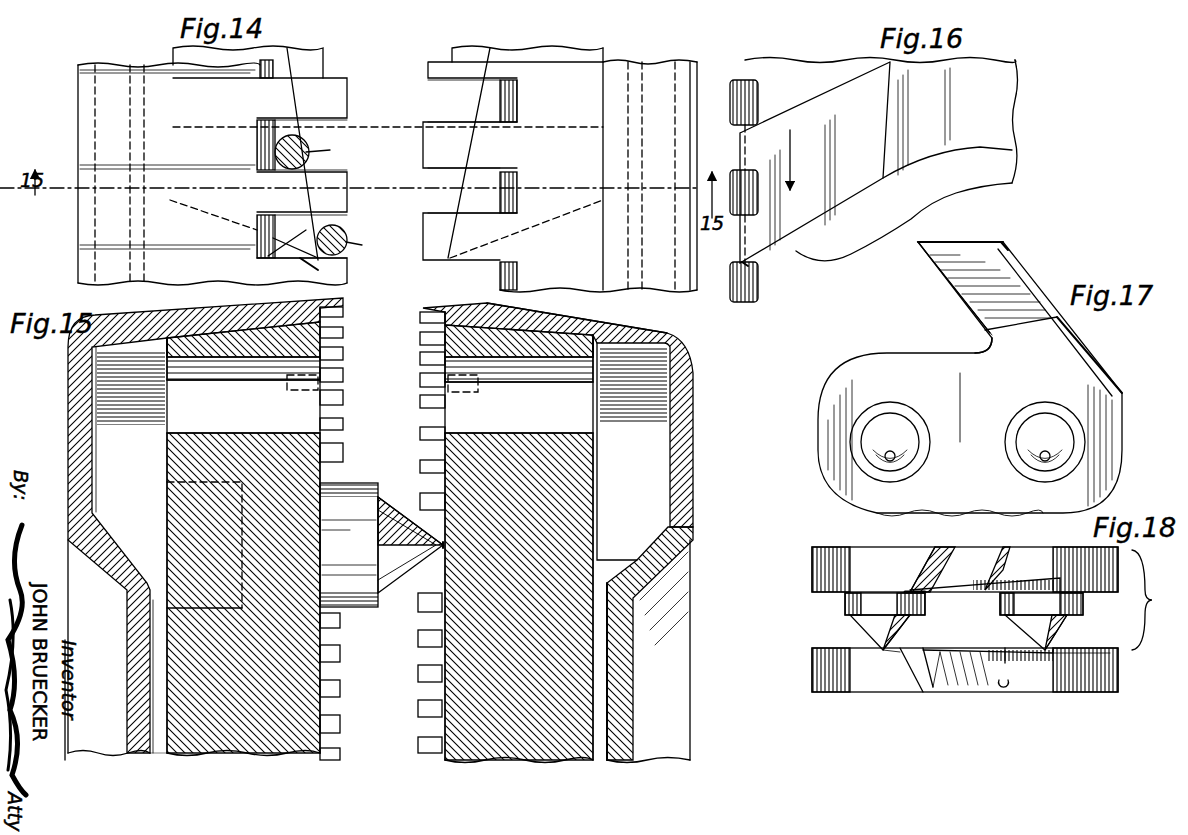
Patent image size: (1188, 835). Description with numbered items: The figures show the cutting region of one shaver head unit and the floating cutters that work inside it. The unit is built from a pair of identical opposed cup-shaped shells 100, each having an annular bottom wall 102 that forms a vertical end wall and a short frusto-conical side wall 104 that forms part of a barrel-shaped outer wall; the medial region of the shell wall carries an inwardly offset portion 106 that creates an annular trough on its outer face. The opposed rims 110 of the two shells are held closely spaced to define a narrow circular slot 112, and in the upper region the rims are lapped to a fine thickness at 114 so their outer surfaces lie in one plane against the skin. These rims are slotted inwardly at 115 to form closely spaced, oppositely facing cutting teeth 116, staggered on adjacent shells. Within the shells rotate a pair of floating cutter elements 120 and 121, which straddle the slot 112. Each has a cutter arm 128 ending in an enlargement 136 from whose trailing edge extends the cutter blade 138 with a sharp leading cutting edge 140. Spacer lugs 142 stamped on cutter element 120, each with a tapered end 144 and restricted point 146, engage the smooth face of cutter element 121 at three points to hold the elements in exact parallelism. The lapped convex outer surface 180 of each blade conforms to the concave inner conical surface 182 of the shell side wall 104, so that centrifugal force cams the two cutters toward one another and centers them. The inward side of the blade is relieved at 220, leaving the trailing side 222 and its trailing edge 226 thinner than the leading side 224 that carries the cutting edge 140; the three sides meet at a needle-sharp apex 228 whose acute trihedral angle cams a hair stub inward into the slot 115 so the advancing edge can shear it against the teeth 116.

In FIG. 15, the cup-shaped shell 100 is at (66, 412).
In FIG. 15, the annular bottom wall 102 is at (695, 432).
In FIG. 14, the frusto-conical side wall 104 is at (197, 245).
In FIG. 15, the frusto-conical side wall 104 is at (152, 318).
In FIG. 15, the inwardly offset portion 106 is at (625, 712).
In FIG. 15, the rim 110 is at (418, 608).
In FIG. 14, the circular slot 112 is at (383, 72).
In FIG. 15, the circular slot 112 is at (392, 720).
In FIG. 14, the ground rim surface 114 is at (330, 95).
In FIG. 15, the ground rim surface 114 is at (343, 303).
In FIG. 14, the slot between teeth 115 is at (518, 118).
In FIG. 14, the cutting teeth 116 is at (282, 115).
In FIG. 16, the cutting teeth 116 is at (740, 100).
In FIG. 15, the cutting teeth 116 is at (490, 303).
In FIG. 16, the cutter element 120 is at (1005, 133).
In FIG. 18, the cutter element 120 is at (842, 562).
In FIG. 15, the cutter element 120 is at (262, 755).
In FIG. 18, the cutter element 121 is at (1073, 694).
In FIG. 15, the cutter element 121 is at (513, 752).
In FIG. 17, the cutter arm 128 is at (1005, 518).
In FIG. 17, the enlargement 136 is at (986, 456).
In FIG. 18, the enlargement 136 is at (960, 696).
In FIG. 15, the enlargement 136 is at (228, 468).
In FIG. 14, the cutter blade 138 is at (321, 207).
In FIG. 16, the cutter blade 138 is at (830, 170).
In FIG. 17, the cutter blade 138 is at (1014, 313).
In FIG. 18, the cutter blade 138 is at (890, 686).
In FIG. 15, the cutter blade 138 is at (289, 413).
In FIG. 17, the leading cutting edge 140 is at (918, 246).
In FIG. 18, the leading cutting edge 140 is at (918, 568).
In FIG. 17, the spacer lug 142 is at (855, 450).
In FIG. 18, the spacer lug 142 is at (850, 600).
In FIG. 15, the spacer lug 142 is at (349, 545).
In FIG. 17, the tapered end 144 is at (876, 455).
In FIG. 18, the tapered end 144 is at (870, 622).
In FIG. 15, the tapered end 144 is at (417, 551).
In FIG. 17, the restricted point 146 is at (886, 461).
In FIG. 18, the restricted point 146 is at (900, 650).
In FIG. 15, the restricted point 146 is at (445, 548).
In FIG. 16, the outer surface 180 is at (722, 193).
In FIG. 17, the outer surface 180 is at (962, 246).
In FIG. 18, the outer surface 180 is at (925, 705).
In FIG. 15, the outer surface 180 is at (380, 386).
In FIG. 15, the inner conical surface 182 is at (232, 380).
In FIG. 17, the relieved portion 220 is at (1077, 326).
In FIG. 18, the relieved portion 220 is at (1005, 664).
In FIG. 15, the relieved portion 220 is at (343, 386).
In FIG. 17, the trailing side 222 is at (1024, 266).
In FIG. 18, the trailing side 222 is at (1000, 583).
In FIG. 17, the leading side 224 is at (955, 292).
In FIG. 17, the trailing edge 226 is at (1008, 244).
In FIG. 18, the trailing edge 226 is at (993, 693).
In FIG. 14, the apex 228 is at (340, 254).
In FIG. 16, the apex 228 is at (748, 263).
In FIG. 17, the apex 228 is at (920, 262).
In FIG. 18, the apex 228 is at (847, 743).